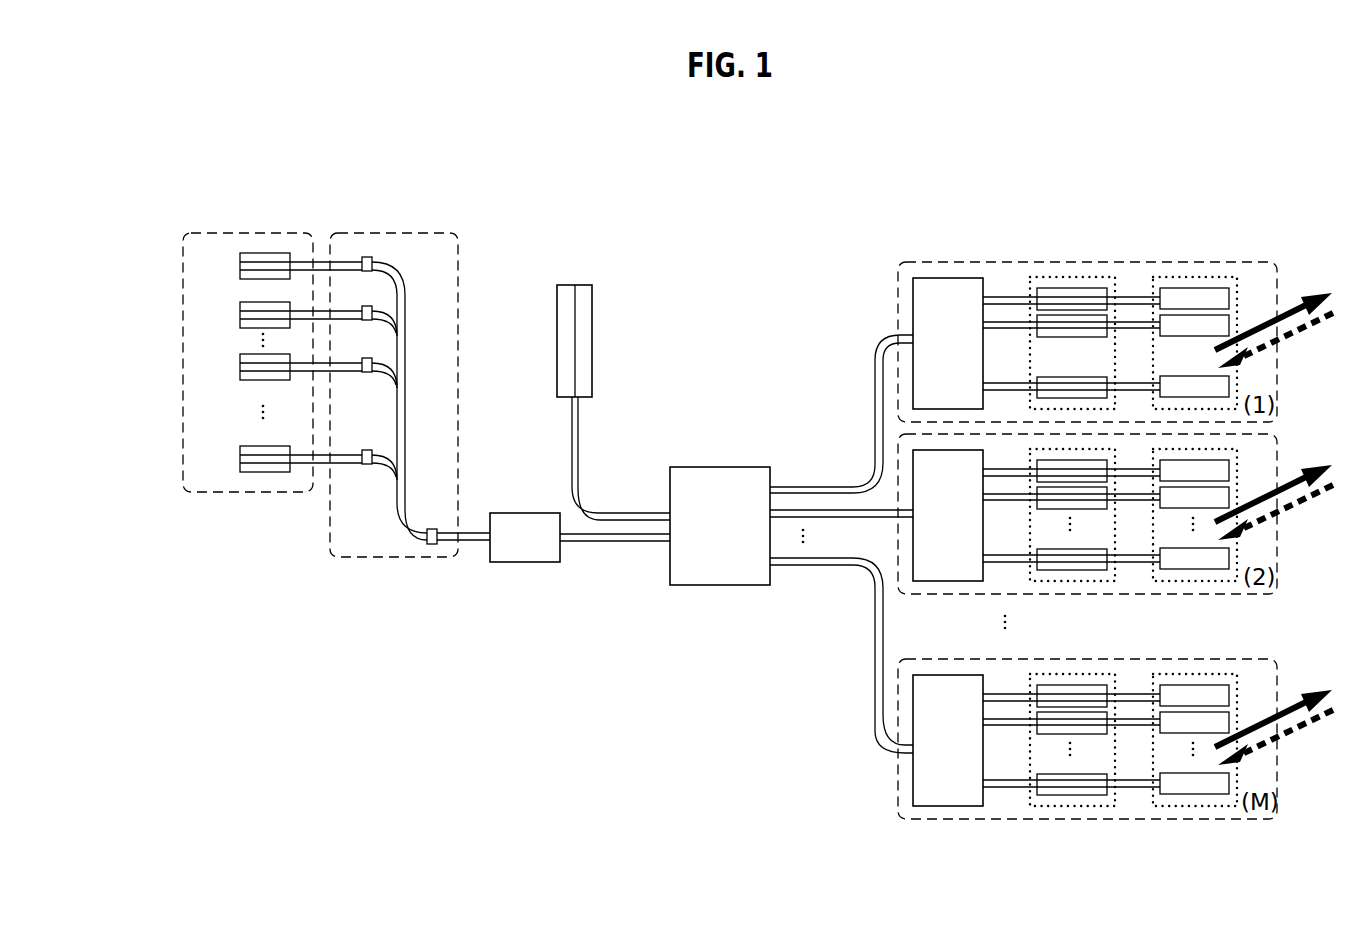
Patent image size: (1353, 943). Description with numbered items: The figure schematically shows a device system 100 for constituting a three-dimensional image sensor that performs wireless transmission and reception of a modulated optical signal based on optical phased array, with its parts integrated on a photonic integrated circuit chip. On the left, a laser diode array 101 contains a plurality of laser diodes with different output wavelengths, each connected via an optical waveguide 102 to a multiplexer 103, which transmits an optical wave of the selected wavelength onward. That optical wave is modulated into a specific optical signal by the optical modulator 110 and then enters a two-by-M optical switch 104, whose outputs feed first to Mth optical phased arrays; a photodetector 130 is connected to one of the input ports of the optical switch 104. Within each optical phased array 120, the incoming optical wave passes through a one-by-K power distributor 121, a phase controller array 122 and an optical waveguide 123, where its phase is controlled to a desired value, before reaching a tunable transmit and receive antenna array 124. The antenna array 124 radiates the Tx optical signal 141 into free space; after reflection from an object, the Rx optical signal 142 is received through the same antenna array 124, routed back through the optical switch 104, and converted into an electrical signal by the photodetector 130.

The device system 100 is at (670, 175).
The laser diode array 101 is at (183, 383).
The optical waveguide 102 is at (347, 458).
The multiplexer 103 is at (418, 558).
The optical switch 104 is at (718, 467).
The optical modulator 110 is at (525, 562).
The optical phased array 120 is at (1240, 262).
The power distributor 121 is at (947, 278).
The phase controller array 122 is at (1070, 278).
The optical waveguide 123 is at (1133, 297).
The tunable transmit and receive antenna array 124 is at (1193, 278).
The photodetector 130 is at (590, 335).
The optical signal 141 is at (1290, 300).
The Rx optical signal 142 is at (1300, 340).